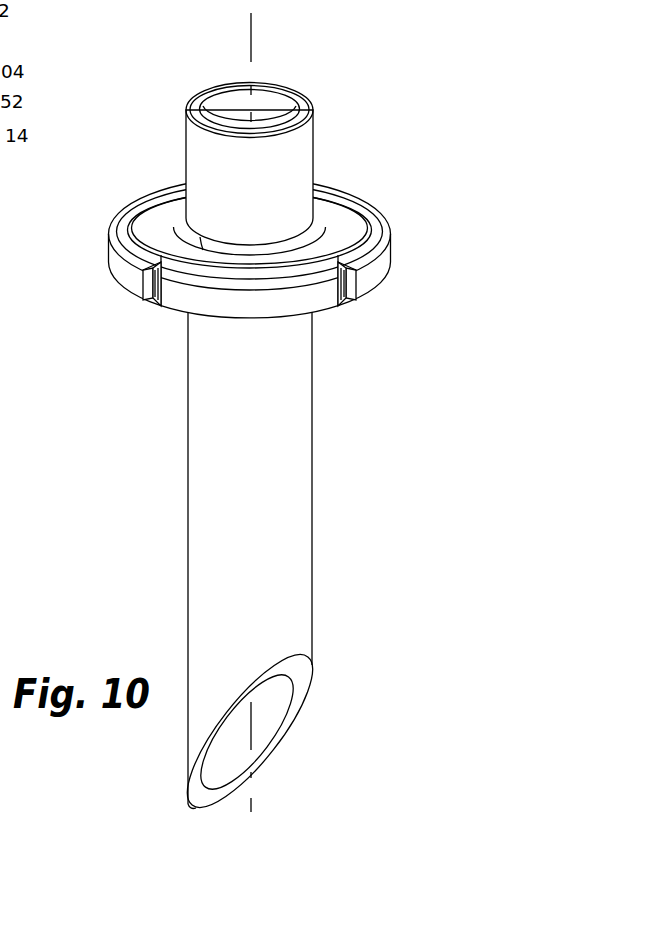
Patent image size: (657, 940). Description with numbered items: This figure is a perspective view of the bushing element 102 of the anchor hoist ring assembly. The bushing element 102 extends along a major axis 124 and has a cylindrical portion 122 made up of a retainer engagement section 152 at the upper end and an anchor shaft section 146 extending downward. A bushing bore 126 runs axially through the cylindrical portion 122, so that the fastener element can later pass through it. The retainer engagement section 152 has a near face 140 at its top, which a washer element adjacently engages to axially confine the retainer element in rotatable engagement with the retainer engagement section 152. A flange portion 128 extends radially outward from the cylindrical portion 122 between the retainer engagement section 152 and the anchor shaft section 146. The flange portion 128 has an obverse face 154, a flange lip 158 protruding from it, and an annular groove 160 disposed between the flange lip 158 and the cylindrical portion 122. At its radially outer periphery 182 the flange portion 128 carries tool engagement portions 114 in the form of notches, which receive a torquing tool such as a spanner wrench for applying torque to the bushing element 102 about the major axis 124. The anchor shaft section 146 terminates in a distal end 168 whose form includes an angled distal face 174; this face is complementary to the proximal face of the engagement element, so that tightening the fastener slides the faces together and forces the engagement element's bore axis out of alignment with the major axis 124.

The bushing element 102 is at (290, 415).
The tool engagement portion 114 is at (152, 287).
The cylindrical portion 122 is at (315, 568).
The major axis 124 is at (252, 43).
The bushing bore 126 is at (236, 97).
The flange portion 128 is at (265, 178).
The near face 140 is at (305, 105).
The anchor shaft section 146 is at (208, 488).
The retainer engagement section 152 is at (242, 125).
The obverse face 154 is at (117, 234).
The flange lip 158 is at (367, 220).
The annular groove 160 is at (165, 215).
The distal end 168 is at (336, 777).
The distal face 174 is at (297, 692).
The radially outer periphery 182 is at (293, 303).